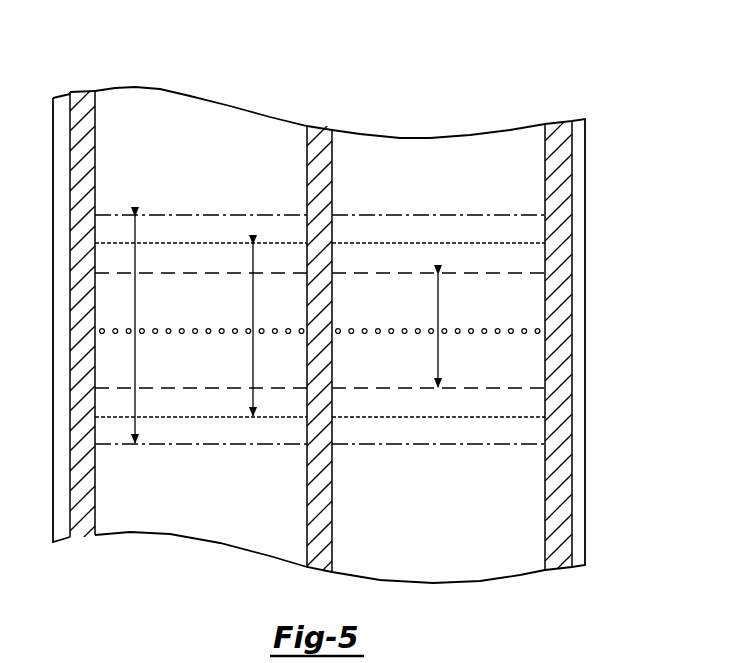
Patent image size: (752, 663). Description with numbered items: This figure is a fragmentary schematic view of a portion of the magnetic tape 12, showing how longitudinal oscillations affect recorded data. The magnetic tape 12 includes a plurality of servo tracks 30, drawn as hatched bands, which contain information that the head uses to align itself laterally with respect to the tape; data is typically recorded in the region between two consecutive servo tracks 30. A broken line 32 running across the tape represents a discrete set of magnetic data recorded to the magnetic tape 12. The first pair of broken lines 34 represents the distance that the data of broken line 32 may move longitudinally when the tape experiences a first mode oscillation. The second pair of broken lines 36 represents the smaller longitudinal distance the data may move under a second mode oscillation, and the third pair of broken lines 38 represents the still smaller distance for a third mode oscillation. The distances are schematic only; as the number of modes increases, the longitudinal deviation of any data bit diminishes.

The magnetic tape 12 is at (586, 220).
The servo tracks 30 is at (79, 92).
The broken line 32 is at (485, 334).
The first pair of broken lines 34 is at (135, 295).
The second pair of broken lines 36 is at (253, 365).
The third pair of broken lines 38 is at (438, 305).